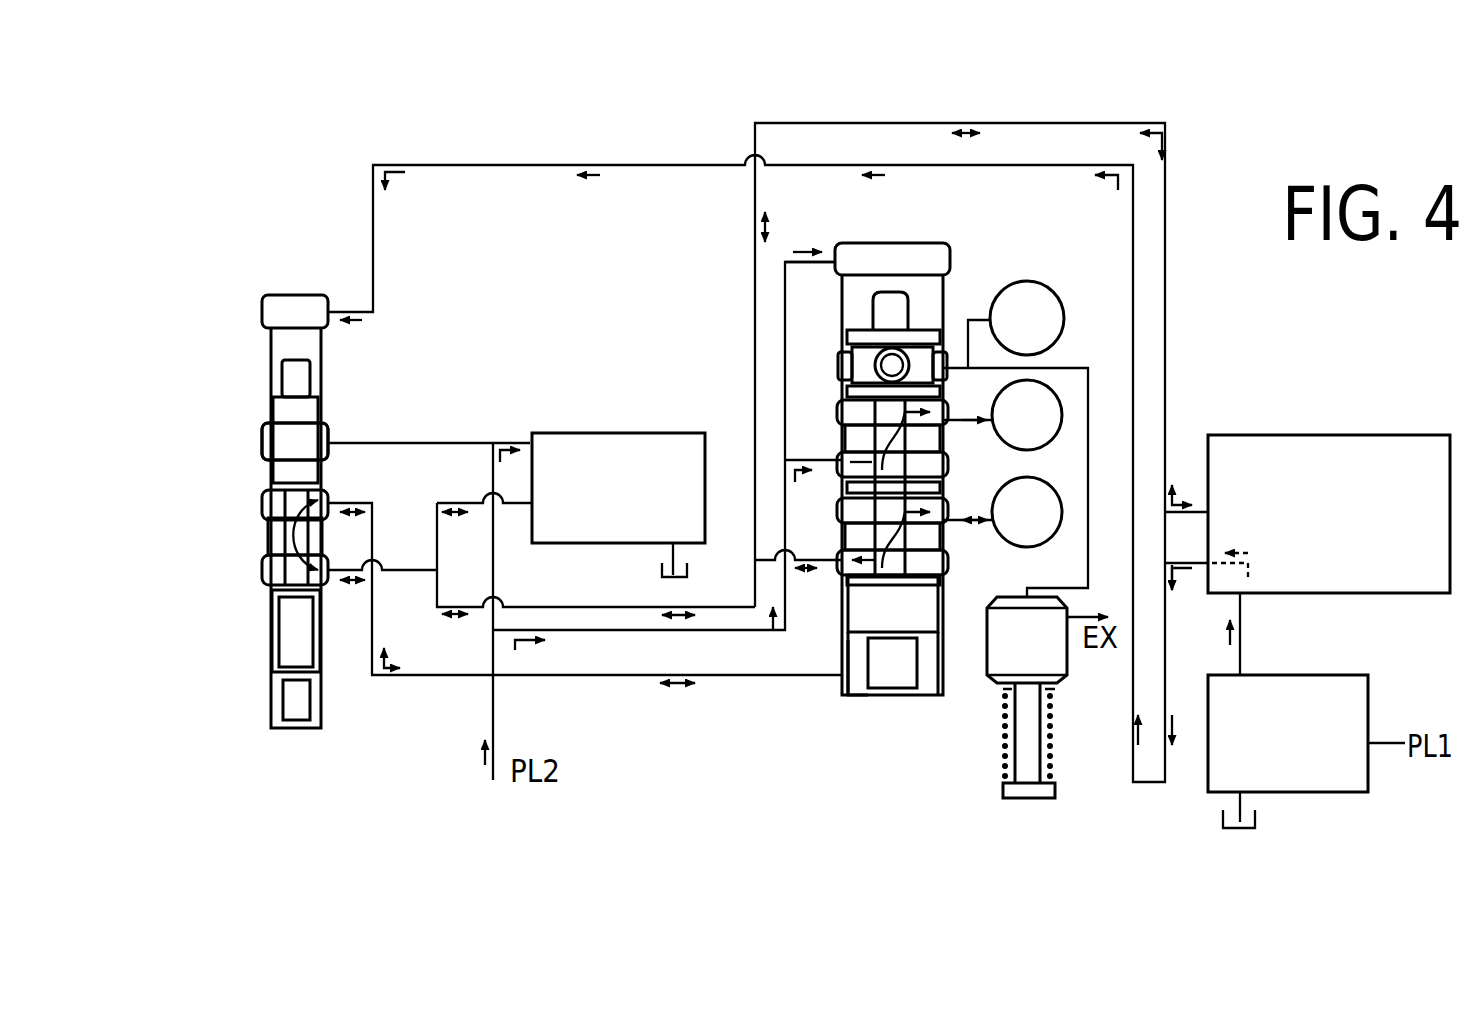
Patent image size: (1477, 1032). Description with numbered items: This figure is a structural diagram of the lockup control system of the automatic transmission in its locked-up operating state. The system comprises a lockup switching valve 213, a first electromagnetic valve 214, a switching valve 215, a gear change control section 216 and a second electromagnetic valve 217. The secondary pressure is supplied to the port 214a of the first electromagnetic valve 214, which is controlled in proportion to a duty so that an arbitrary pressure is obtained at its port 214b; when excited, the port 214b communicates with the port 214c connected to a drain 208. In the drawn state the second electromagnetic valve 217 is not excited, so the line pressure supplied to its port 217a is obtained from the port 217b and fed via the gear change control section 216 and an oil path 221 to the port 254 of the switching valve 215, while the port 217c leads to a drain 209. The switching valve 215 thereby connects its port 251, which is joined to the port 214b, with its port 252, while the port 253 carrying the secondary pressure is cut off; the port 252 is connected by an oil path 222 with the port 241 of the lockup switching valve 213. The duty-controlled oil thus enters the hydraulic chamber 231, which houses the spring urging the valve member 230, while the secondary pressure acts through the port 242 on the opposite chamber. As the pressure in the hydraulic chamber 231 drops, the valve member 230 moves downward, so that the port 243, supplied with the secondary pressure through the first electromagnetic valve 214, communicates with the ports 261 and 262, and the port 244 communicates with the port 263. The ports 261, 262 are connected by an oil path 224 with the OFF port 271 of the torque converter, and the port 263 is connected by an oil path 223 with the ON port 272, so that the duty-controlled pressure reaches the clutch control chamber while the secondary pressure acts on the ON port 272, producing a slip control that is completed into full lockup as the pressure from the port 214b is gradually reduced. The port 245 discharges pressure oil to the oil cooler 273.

The drain 208 is at (698, 560).
The drain 209 is at (1222, 815).
The lockup switching valve 213 is at (921, 465).
The first electromagnetic valve 214 is at (605, 433).
The port 214a is at (530, 438).
The port 214b is at (532, 546).
The port 214c is at (668, 548).
The switching valve 215 is at (268, 360).
The gear change control section 216 is at (1378, 435).
The second electromagnetic valve 217 is at (1335, 675).
The port 217a is at (1370, 748).
The port 217b is at (1242, 672).
The port 217c is at (1257, 812).
The oil path 221 is at (523, 165).
The oil path 222 is at (685, 677).
The oil path 223 is at (950, 418).
The oil path 224 is at (950, 508).
The valve member 230 is at (858, 362).
The hydraulic chamber 231 is at (925, 675).
The port 241 is at (838, 680).
The port 242 is at (833, 272).
The port 243 is at (836, 572).
The port 244 is at (838, 462).
The port 245 is at (965, 335).
The port 251 is at (330, 588).
The port 252 is at (330, 515).
The port 253 is at (333, 443).
The port 254 is at (330, 310).
The port 261 is at (965, 535).
The port 262 is at (1015, 482).
The port 263 is at (965, 422).
The OFF port 271 is at (1060, 514).
The ON port 272 is at (1055, 382).
The oil cooler 273 is at (1058, 296).